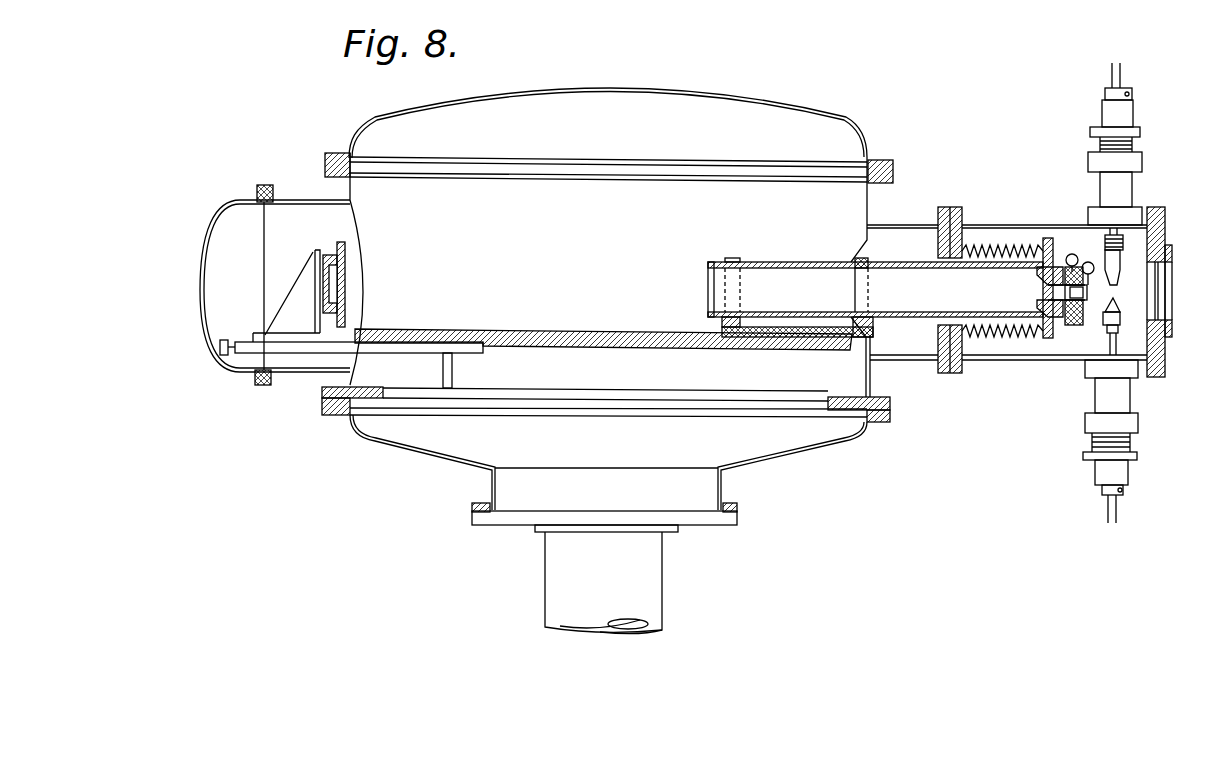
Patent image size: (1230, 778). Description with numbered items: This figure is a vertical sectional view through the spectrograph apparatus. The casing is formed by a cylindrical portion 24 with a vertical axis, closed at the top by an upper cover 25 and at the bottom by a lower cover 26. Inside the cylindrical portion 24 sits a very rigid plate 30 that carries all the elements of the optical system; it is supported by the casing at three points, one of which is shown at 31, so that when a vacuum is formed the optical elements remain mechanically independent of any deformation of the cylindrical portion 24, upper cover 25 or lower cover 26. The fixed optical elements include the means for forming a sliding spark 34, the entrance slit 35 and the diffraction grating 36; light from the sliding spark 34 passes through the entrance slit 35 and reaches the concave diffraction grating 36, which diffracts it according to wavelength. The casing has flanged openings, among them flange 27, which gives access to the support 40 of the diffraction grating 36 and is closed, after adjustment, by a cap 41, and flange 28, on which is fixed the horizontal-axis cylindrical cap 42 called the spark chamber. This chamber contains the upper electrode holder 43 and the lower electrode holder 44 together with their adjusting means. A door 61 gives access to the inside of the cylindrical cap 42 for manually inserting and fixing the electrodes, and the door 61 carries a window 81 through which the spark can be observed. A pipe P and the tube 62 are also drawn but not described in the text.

The cylindrical portion 24 is at (870, 203).
The upper cover 25 is at (643, 90).
The lower cover 26 is at (758, 463).
The flange 27 is at (273, 187).
The flange 28 is at (942, 207).
The rigid plate 30 is at (560, 347).
The fixation point 31 is at (452, 377).
The sliding spark 34 is at (1113, 293).
The entrance slit 35 is at (1090, 283).
The diffraction grating 36 is at (338, 283).
The support 40 is at (293, 348).
The cap 41 is at (200, 290).
The cylindrical cap 42 is at (1000, 225).
The upper electrode holder 43 is at (1113, 185).
The lower electrode holder 44 is at (1125, 449).
The door 61 is at (1165, 365).
The tube 62 is at (770, 262).
The window 81 is at (1166, 312).
The pipe P is at (572, 571).